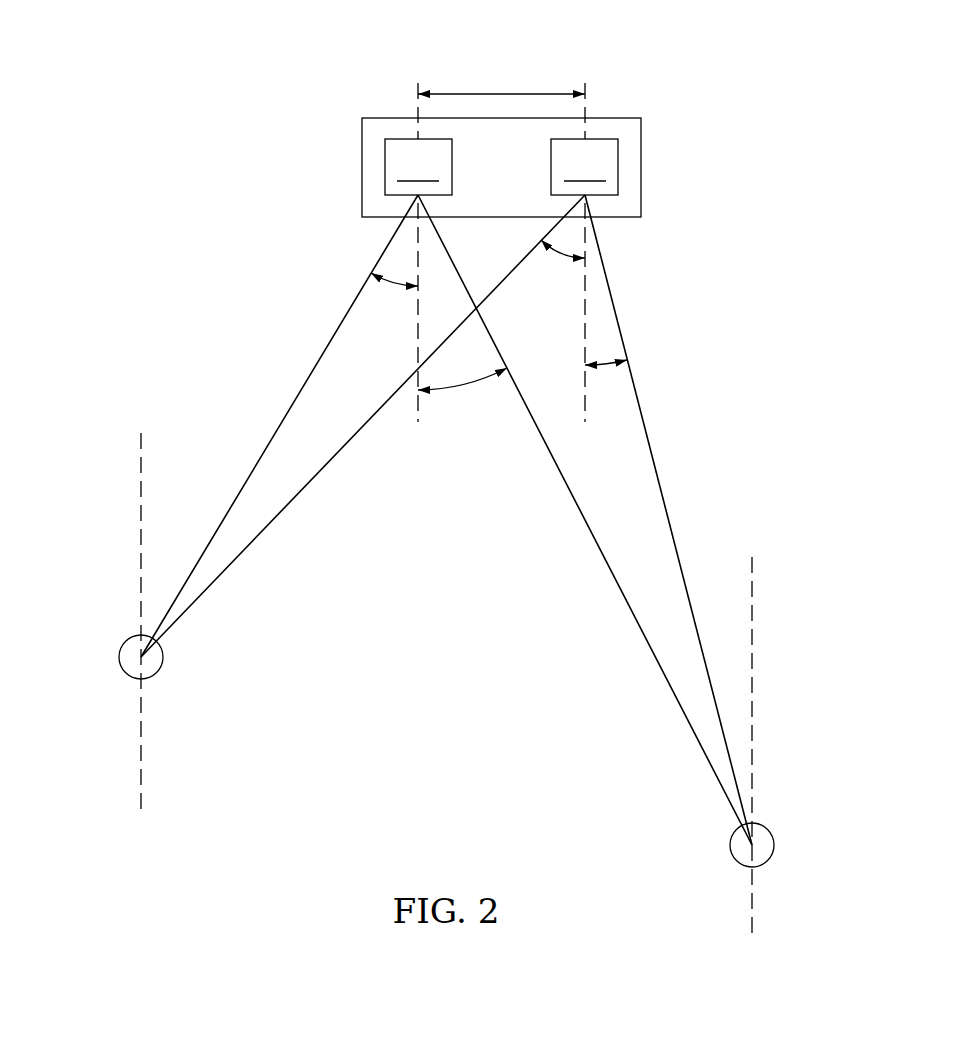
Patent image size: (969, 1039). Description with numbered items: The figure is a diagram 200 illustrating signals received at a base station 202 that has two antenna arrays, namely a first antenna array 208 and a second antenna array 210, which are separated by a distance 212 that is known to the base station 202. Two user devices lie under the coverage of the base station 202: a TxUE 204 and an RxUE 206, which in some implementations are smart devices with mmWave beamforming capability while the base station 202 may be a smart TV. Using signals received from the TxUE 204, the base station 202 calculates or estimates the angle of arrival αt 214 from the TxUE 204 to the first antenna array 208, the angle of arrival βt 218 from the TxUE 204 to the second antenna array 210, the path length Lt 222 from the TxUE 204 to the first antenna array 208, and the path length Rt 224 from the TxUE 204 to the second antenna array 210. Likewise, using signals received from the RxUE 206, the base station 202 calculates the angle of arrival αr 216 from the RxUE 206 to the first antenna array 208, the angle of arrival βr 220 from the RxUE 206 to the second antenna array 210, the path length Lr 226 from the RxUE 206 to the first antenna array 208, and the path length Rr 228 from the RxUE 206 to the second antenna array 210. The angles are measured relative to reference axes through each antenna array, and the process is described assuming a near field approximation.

The diagram 200 is at (245, 121).
The base station 202 is at (643, 164).
The TxUE 204 is at (119, 657).
The RxUE 206 is at (774, 845).
The first antenna array 208 is at (418, 252).
The second antenna array 210 is at (584, 252).
The distance 212 is at (502, 94).
The angle of arrival αt 214 is at (390, 288).
The angle of arrival αr 216 is at (467, 388).
The angle of arrival βt 218 is at (548, 260).
The angle of arrival βr 220 is at (607, 368).
The path length Lt 222 is at (275, 425).
The path length Rt 224 is at (348, 440).
The path length Lr 226 is at (586, 520).
The path length Rr 228 is at (673, 520).